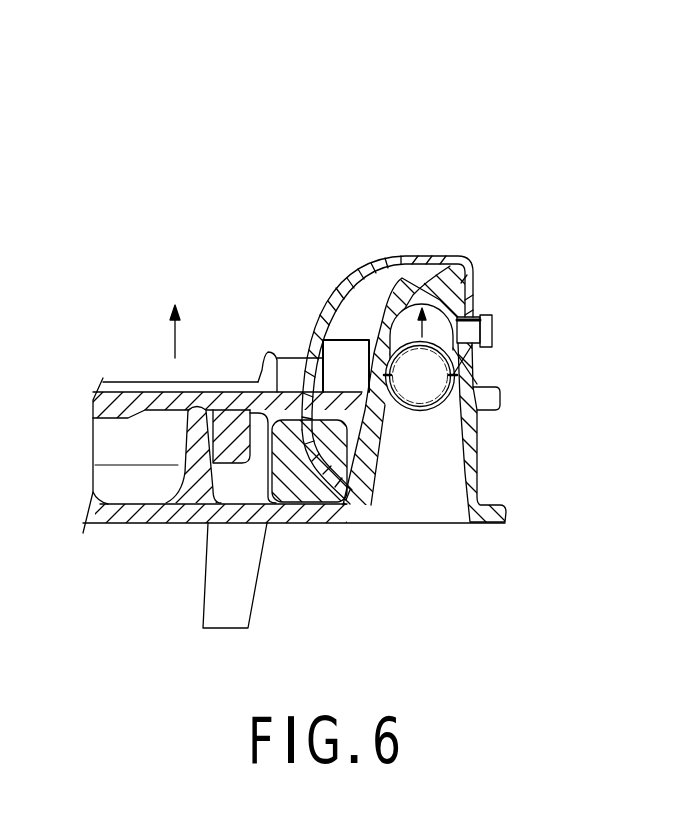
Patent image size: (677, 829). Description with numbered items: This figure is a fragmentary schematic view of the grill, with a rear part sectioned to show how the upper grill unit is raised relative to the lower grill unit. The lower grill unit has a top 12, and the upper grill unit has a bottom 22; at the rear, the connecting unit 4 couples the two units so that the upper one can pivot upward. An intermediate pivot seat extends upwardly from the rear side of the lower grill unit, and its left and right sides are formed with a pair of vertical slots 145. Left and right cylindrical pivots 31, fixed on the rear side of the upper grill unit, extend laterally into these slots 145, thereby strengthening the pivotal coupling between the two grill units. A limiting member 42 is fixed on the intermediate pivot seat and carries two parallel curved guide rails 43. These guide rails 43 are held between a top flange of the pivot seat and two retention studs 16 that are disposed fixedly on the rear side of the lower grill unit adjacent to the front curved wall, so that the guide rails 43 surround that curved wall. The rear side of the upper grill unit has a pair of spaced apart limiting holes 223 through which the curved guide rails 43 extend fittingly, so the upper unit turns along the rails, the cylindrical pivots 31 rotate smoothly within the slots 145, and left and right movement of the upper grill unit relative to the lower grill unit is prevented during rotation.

The housing assembly 4 is at (438, 218).
The limiting member 42 is at (469, 302).
The curved guide rails 43 is at (328, 310).
The vertical slots 145 is at (470, 352).
The cylindrical pivots 31 is at (452, 393).
The bottom 22 is at (148, 395).
The limiting holes 223 is at (273, 357).
The top 12 is at (137, 524).
The retention studs 16 is at (296, 482).